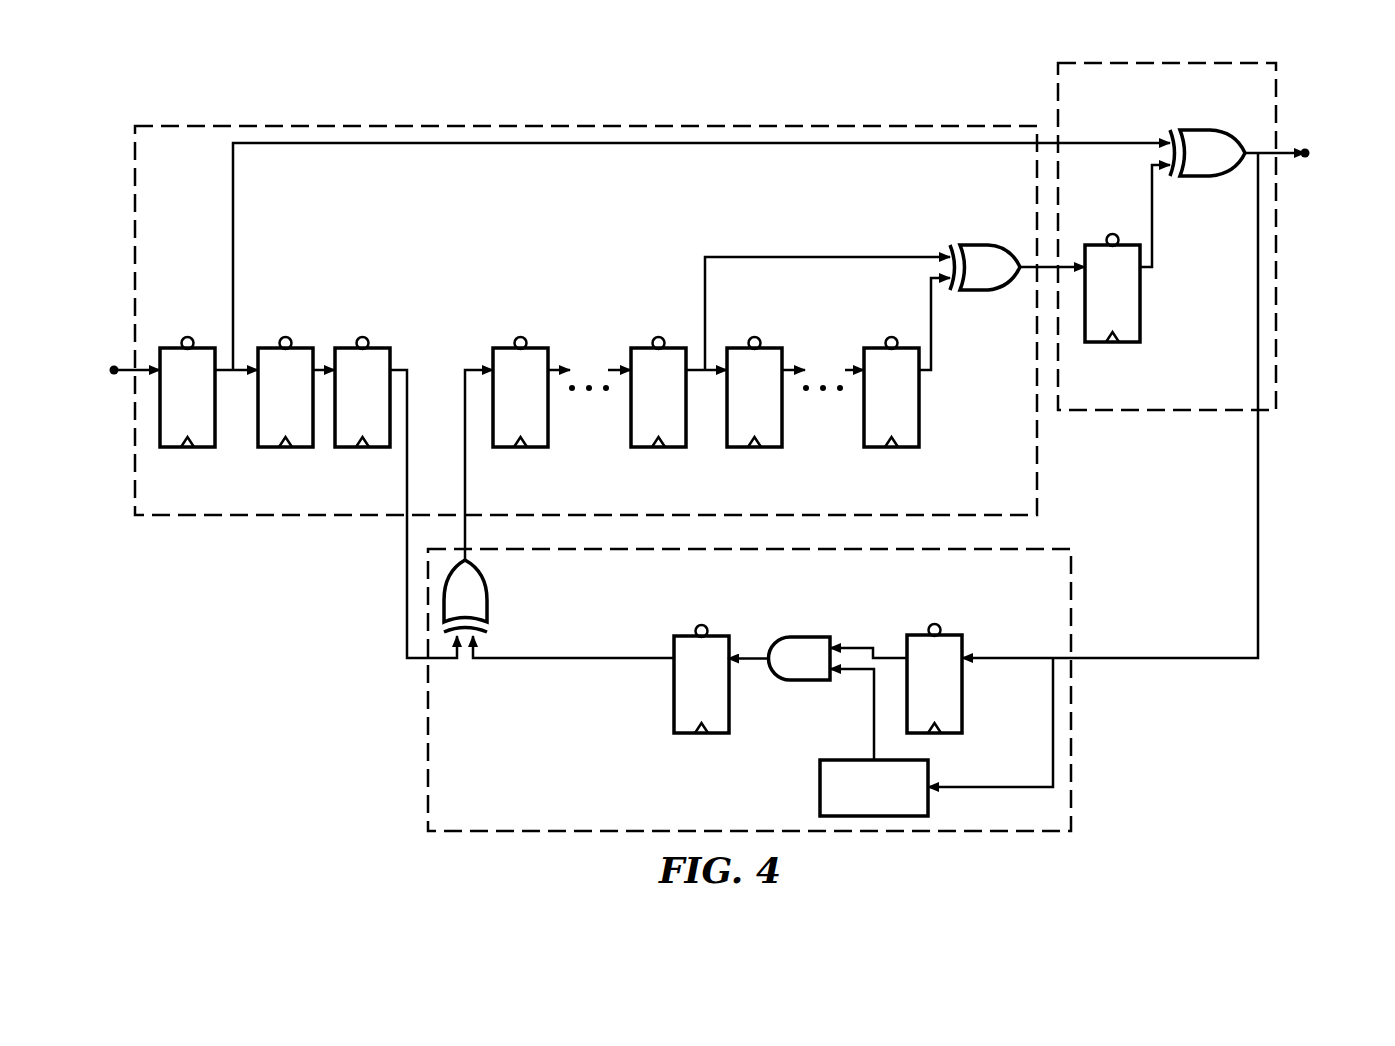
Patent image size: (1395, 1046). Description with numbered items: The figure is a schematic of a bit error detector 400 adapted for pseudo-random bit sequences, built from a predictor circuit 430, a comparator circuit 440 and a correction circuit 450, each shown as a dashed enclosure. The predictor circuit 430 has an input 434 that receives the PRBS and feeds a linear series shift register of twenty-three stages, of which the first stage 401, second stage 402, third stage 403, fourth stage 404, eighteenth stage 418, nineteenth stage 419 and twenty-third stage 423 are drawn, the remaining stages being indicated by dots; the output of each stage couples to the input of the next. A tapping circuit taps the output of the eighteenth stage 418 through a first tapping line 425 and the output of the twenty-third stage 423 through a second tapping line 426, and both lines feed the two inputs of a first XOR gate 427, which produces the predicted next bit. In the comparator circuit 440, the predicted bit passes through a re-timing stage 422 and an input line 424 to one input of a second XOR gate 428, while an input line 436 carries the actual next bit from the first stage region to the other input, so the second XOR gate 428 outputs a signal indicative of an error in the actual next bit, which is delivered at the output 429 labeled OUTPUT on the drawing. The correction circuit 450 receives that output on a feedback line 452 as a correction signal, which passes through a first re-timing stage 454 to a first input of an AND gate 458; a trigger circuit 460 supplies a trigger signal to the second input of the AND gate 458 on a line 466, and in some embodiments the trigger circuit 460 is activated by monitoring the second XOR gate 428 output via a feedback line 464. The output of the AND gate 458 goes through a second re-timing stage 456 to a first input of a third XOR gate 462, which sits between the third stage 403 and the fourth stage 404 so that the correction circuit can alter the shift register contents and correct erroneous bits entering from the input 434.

The bit error detector 400 is at (826, 92).
The first stage 401 is at (202, 449).
The second stage 402 is at (300, 449).
The third stage 403 is at (377, 449).
The fourth stage 404 is at (536, 449).
The eighteenth stage 418 is at (673, 449).
The nineteenth stage 419 is at (770, 449).
The twenty-third stage 423 is at (907, 449).
The re-timing stage 422 is at (1128, 344).
The input line 424 is at (1152, 216).
The first tapping line 425 is at (828, 257).
The second tapping line 426 is at (931, 316).
The first XOR gate 427 is at (980, 245).
The second XOR gate 428 is at (1203, 130).
The output node 429 is at (1305, 150).
The predictor circuit 430 is at (572, 126).
The input 434 is at (114, 377).
The input line 436 is at (1112, 143).
The comparator circuit 440 is at (1170, 412).
The correction circuit 450 is at (428, 740).
The feedback line 452 is at (1117, 658).
The first re-timing stage 454 is at (962, 680).
The second re-timing stage 456 is at (684, 735).
The AND gate 458 is at (805, 637).
The trigger circuit 460 is at (820, 790).
The third XOR gate 462 is at (487, 596).
The feedback line 464 is at (1012, 787).
The line 466 is at (874, 718).